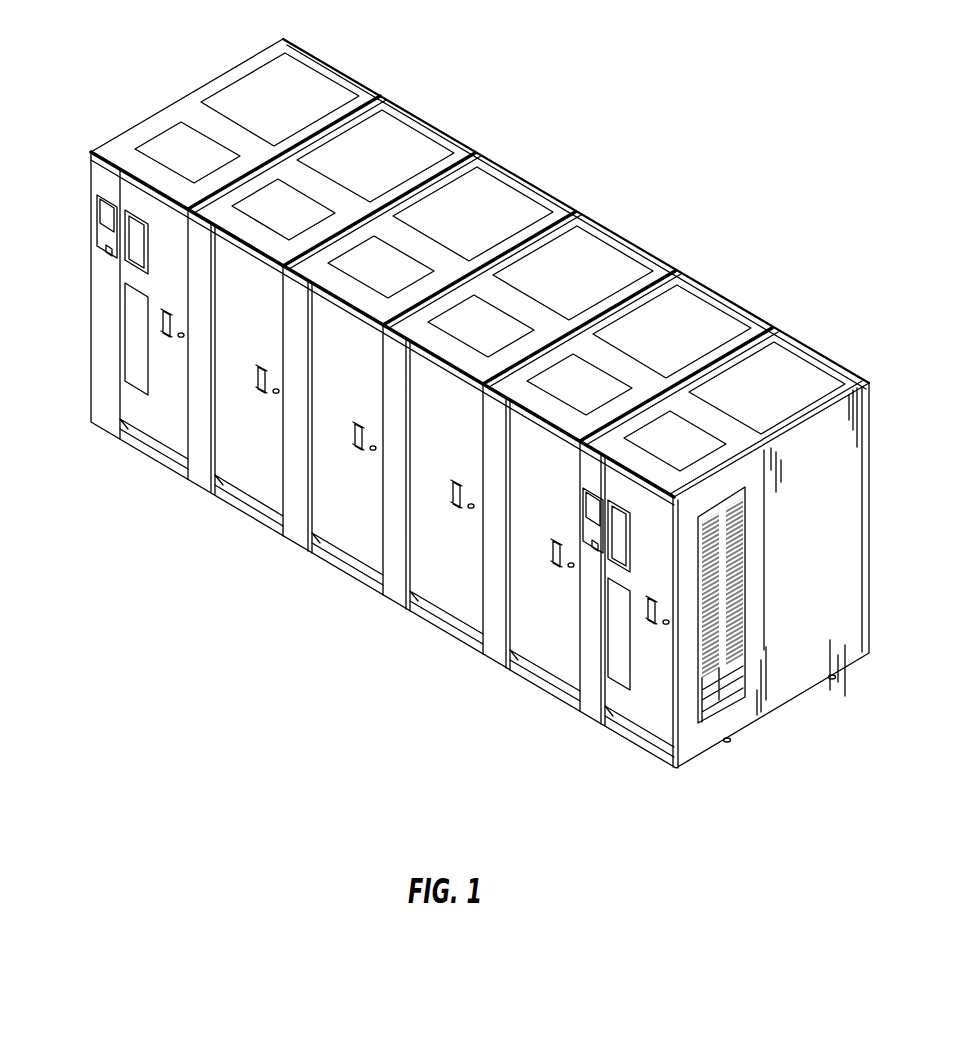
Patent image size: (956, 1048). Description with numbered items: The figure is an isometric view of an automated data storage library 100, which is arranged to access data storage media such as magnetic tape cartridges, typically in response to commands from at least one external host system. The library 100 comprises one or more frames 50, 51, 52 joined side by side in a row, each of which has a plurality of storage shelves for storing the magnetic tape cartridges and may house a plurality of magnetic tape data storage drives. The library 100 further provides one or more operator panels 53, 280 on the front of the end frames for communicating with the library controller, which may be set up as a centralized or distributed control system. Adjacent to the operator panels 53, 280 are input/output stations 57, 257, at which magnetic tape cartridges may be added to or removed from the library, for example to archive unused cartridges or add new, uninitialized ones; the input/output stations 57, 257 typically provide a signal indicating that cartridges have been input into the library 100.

The automated data storage library 100 is at (256, 632).
The frame 50 is at (816, 352).
The frame 51 is at (430, 123).
The frame 52 is at (317, 53).
The operator panel 53 is at (585, 516).
The input/output station 57 is at (625, 554).
The input/output station 257 is at (148, 256).
The operator panel 280 is at (103, 218).